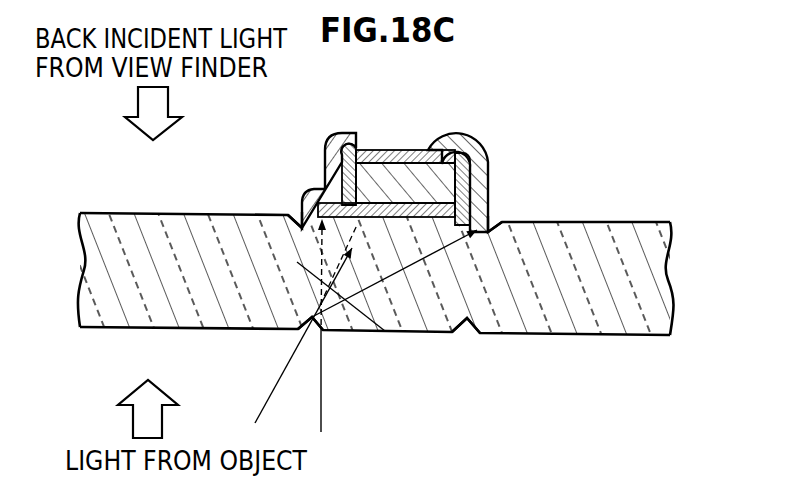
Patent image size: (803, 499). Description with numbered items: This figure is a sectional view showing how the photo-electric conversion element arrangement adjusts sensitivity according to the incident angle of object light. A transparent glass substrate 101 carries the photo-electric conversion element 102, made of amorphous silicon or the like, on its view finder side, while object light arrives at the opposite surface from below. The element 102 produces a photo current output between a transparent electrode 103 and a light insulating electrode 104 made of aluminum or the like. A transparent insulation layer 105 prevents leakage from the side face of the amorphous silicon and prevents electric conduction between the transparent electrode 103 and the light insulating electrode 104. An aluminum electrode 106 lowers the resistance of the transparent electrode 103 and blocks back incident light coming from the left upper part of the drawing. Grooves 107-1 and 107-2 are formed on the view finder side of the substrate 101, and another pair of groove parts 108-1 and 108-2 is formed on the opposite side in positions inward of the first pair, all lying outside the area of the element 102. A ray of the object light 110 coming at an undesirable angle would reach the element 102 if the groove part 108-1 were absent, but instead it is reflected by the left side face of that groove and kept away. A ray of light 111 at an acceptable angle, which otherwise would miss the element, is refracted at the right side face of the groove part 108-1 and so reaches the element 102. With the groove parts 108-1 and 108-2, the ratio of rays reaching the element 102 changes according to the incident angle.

The transparent glass substrate 101 is at (110, 315).
The photo-electric conversion element 102 is at (403, 172).
The transparent electrode 103 is at (388, 208).
The light insulating electrode 104 is at (478, 146).
The transparent insulation layer 105 is at (347, 150).
The aluminum electrode 106 is at (306, 193).
The groove 107-1 is at (299, 230).
The groove 107-2 is at (486, 236).
The groove part 108-1 is at (300, 332).
The groove part 108-2 is at (466, 337).
The ray of the object light 110 is at (273, 390).
The ray of light 111 is at (323, 408).